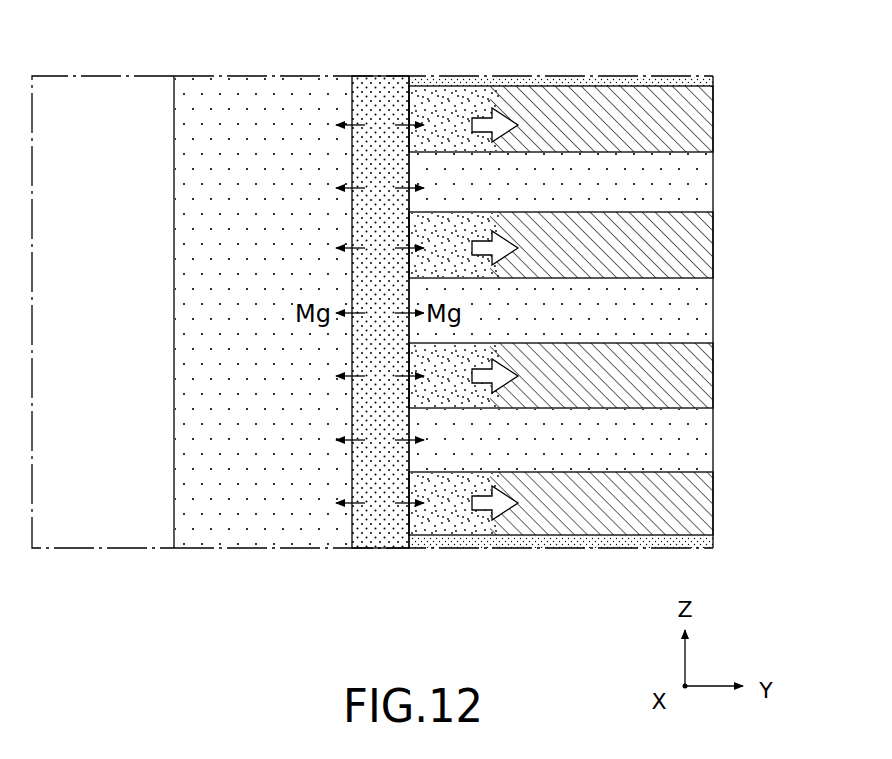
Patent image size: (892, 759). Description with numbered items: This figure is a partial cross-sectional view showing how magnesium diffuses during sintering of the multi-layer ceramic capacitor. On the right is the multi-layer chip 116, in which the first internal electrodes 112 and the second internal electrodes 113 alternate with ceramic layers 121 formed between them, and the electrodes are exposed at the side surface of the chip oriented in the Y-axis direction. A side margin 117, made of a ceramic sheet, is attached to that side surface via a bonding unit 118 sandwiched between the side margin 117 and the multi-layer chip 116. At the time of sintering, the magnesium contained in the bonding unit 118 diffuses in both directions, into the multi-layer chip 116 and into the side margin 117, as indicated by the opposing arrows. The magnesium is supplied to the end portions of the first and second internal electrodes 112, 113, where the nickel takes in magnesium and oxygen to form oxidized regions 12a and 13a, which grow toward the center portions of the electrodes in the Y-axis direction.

The first internal electrodes 112 is at (690, 127).
The second internal electrodes 113 is at (690, 252).
The ceramic layers 121 is at (690, 190).
The multi-layer chip 116 is at (713, 72).
The side margin 117 is at (174, 72).
The bonding unit 118 is at (353, 72).
The oxidized region 12a is at (464, 247).
The oxidized region 13a is at (464, 373).